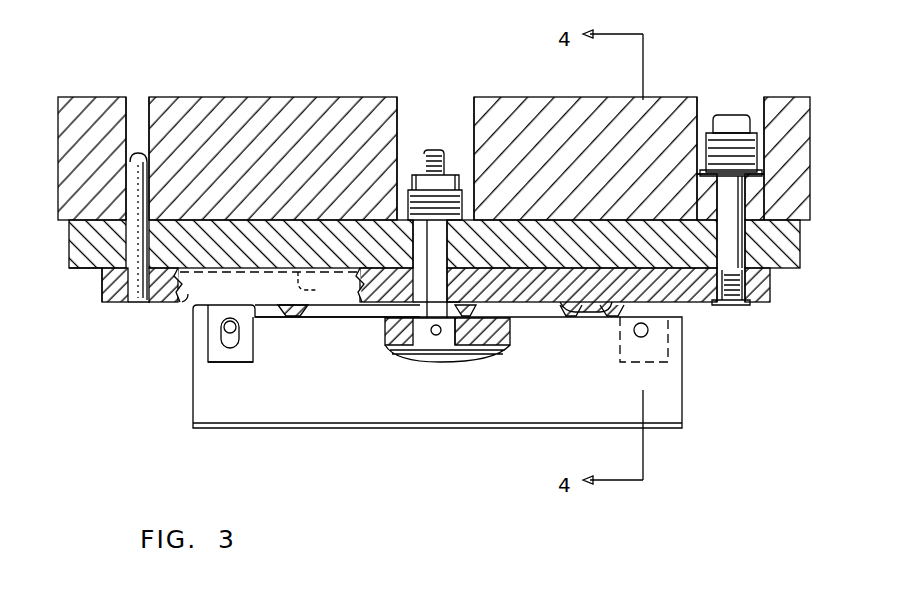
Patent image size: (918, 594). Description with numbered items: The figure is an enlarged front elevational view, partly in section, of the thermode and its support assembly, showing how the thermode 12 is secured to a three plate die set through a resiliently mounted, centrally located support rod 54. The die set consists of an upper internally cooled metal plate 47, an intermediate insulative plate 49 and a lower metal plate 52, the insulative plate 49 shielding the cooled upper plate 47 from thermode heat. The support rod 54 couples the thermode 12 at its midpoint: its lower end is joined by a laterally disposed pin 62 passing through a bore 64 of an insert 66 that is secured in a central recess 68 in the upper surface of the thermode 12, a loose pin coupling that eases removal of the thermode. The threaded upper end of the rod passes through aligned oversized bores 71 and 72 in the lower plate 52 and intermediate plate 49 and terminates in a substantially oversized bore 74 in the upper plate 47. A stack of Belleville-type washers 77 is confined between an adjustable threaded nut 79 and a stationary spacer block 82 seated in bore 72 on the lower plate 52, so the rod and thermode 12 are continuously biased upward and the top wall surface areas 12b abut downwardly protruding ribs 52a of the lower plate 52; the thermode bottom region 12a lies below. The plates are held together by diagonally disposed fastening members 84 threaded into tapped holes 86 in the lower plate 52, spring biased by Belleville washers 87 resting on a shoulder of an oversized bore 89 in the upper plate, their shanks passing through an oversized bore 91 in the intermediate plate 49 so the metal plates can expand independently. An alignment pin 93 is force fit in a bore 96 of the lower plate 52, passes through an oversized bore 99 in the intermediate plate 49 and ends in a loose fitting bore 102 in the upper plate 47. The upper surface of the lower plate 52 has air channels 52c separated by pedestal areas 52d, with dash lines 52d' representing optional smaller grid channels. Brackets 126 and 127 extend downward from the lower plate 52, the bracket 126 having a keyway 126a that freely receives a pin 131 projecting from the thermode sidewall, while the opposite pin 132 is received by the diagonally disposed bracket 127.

The thermode 12 is at (682, 400).
The bracket base 12a is at (418, 430).
The top wall surface areas 12b is at (300, 320).
The upper internally cooled metal plate 47 is at (222, 97).
The intermediate insulative plate 49 is at (778, 240).
The lower metal plate 52 is at (760, 288).
The downwardly protruding ribs 52a is at (292, 314).
The air channels 52c is at (652, 302).
The pedestal areas 52d is at (381, 345).
The horizontal dash lines 52d' is at (326, 286).
The support rod 54 is at (420, 314).
The pin 62 is at (440, 336).
The bore 64 is at (434, 336).
The insert 66 is at (458, 340).
The central recess 68 is at (405, 345).
The oversized bore 71 is at (482, 332).
The oversized bore 72 is at (494, 322).
The oversized bore 74 is at (440, 100).
The Belleville-type washers 77 is at (412, 192).
The threaded nut 79 is at (432, 178).
The spacer block 82 is at (425, 276).
The fastening members 84 is at (732, 116).
The tapped holes 86 is at (740, 300).
The Belleville washers 87 is at (752, 140).
The oversized bore 89 is at (705, 110).
The oversized bore 91 is at (752, 285).
The alignment pins 93 is at (136, 300).
The bore 96 is at (128, 300).
The oversized bore 99 is at (118, 266).
The loose fitting bore 102 is at (136, 110).
The bracket 126 is at (248, 366).
The keyway 126a is at (232, 344).
The bracket 127 is at (660, 358).
The pin 131 is at (226, 332).
The pin 132 is at (648, 336).